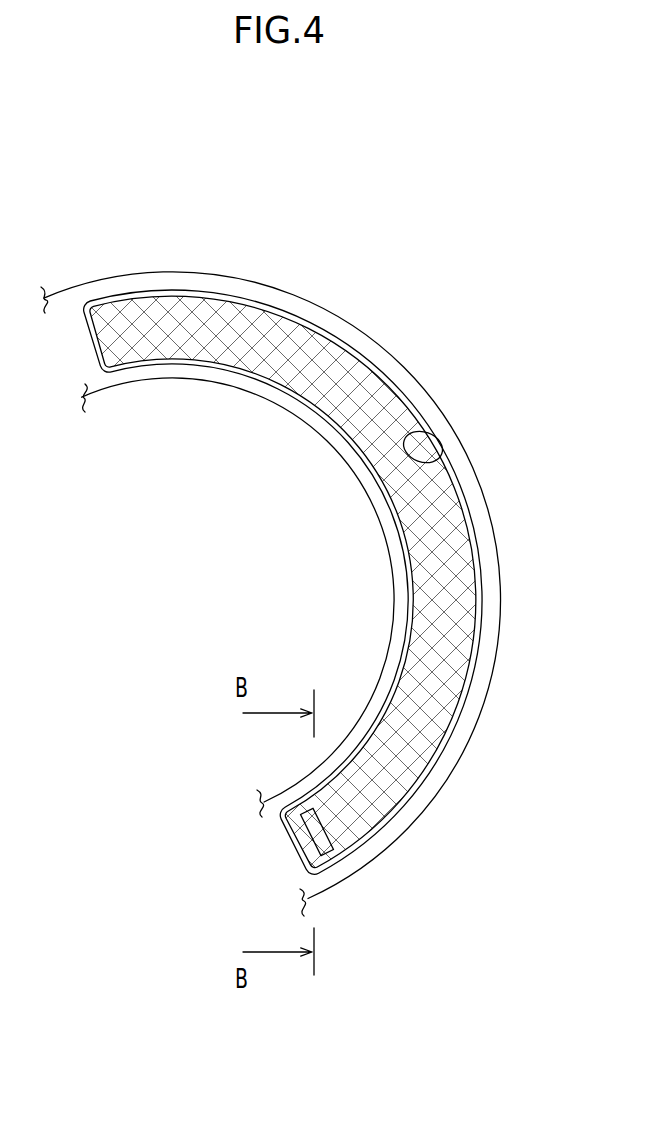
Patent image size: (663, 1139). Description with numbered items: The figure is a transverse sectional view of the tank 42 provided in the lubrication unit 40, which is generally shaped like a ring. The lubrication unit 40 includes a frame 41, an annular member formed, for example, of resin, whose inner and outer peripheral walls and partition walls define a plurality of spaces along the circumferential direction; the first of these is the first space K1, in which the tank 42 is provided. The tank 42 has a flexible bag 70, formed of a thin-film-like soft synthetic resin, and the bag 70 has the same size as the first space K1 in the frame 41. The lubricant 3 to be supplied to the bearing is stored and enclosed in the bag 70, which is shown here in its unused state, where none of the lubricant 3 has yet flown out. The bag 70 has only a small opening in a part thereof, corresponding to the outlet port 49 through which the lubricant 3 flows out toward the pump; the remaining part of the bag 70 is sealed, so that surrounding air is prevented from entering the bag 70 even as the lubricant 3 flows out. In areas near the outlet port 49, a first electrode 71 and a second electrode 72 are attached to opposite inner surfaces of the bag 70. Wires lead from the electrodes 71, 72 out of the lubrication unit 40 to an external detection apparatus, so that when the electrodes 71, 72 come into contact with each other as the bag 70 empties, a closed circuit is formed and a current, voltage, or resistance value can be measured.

The lubricant 3 is at (430, 690).
The lubrication unit 40 is at (271, 537).
The frame 41 is at (68, 323).
The tank 42 is at (335, 335).
The outlet port 49 is at (280, 823).
The bag 70 is at (425, 458).
The first electrode 71 is at (330, 830).
The second electrode 72 is at (388, 863).
The first space K1 is at (344, 392).